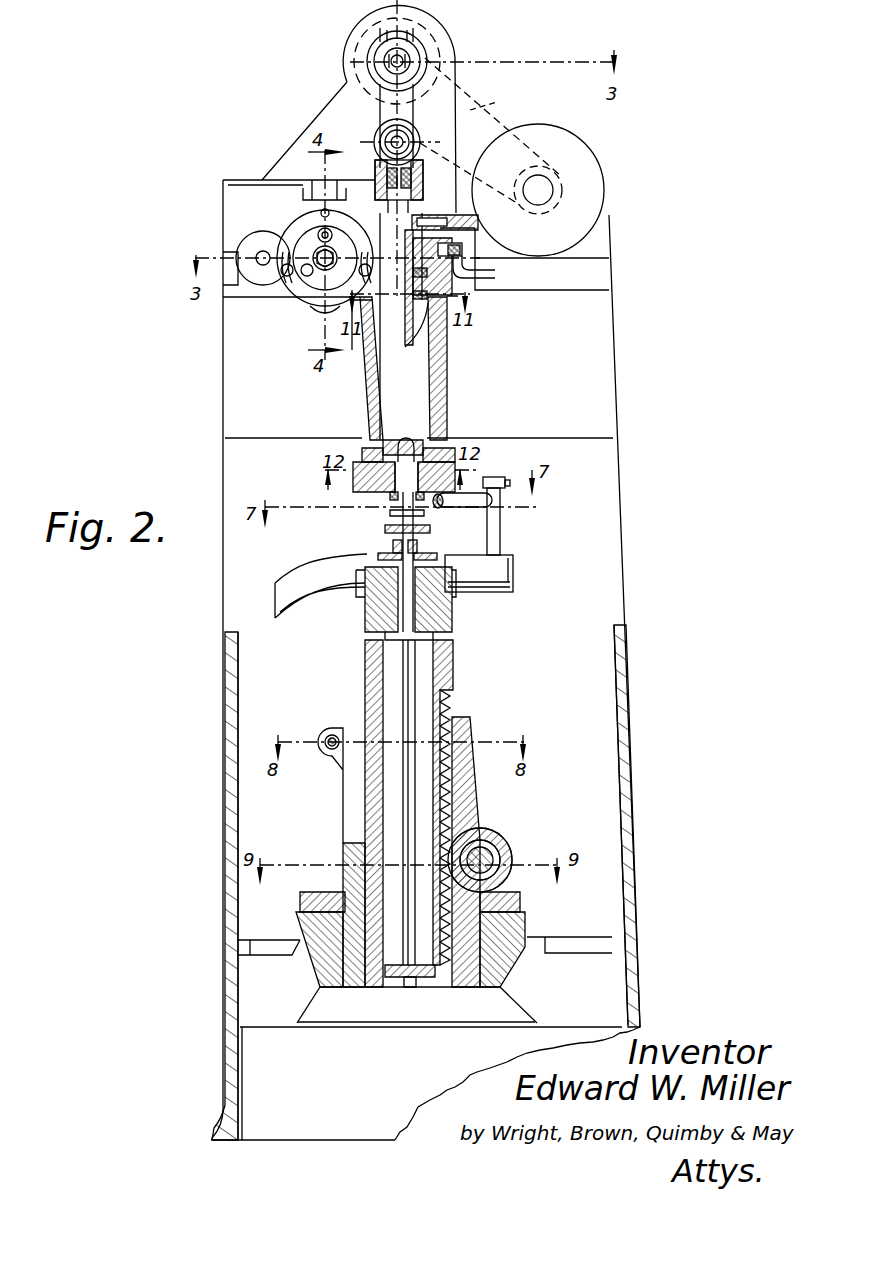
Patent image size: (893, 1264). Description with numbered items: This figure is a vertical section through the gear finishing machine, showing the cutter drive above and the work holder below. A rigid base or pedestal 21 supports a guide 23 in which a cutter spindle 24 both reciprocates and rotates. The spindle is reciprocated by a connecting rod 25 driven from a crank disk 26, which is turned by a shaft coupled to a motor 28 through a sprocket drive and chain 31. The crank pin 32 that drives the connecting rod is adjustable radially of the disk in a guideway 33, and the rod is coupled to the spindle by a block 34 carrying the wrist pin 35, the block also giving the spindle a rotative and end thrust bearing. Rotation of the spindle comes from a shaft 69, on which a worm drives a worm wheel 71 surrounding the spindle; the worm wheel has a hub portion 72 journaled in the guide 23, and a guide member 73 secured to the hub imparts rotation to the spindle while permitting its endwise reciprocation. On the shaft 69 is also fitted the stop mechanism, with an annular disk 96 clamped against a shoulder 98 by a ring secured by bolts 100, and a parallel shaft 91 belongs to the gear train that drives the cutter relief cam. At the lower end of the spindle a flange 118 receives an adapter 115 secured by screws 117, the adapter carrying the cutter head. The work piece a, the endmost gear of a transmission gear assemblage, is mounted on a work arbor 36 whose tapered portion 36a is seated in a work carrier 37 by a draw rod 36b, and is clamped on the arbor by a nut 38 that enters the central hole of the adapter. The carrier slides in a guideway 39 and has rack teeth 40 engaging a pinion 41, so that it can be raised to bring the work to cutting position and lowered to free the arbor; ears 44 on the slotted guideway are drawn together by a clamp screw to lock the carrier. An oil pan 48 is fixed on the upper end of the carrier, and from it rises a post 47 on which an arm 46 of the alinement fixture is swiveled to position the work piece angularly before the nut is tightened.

The base or pedestal 21 is at (605, 712).
The guide 23 is at (447, 410).
The cutter spindle 24 is at (401, 326).
The connecting rod 25 is at (388, 104).
The crank disk 26 is at (425, 45).
The motor 28 is at (582, 162).
The chain 31 is at (497, 102).
The crank pin 32 is at (385, 60).
The guideway 33 is at (400, 24).
The block 34 is at (375, 172).
The wrist pin 35 is at (382, 140).
The work arbor 36 is at (402, 540).
The tapered portion 36a is at (415, 630).
The draw rod 36b is at (408, 790).
The work carrier 37 is at (365, 672).
The nut 38 is at (390, 497).
The guideway 39 is at (470, 730).
The rack teeth 40 is at (452, 705).
The pinion 41 is at (500, 838).
The ears 44 is at (328, 735).
The arm 46 is at (470, 507).
The post 47 is at (500, 530).
The oil pan 48 is at (490, 580).
The shaft 69 is at (331, 251).
The worm wheel 71 is at (462, 266).
The hub portion 72 is at (430, 300).
The guide member 73 is at (425, 315).
The shaft 91 is at (262, 255).
The annular disk 96 is at (323, 283).
The shoulder 98 is at (335, 283).
The bolts 100 is at (322, 232).
The adapter 115 is at (355, 475).
The screws 117 is at (372, 450).
The flange 118 is at (440, 450).
The work piece a is at (390, 513).